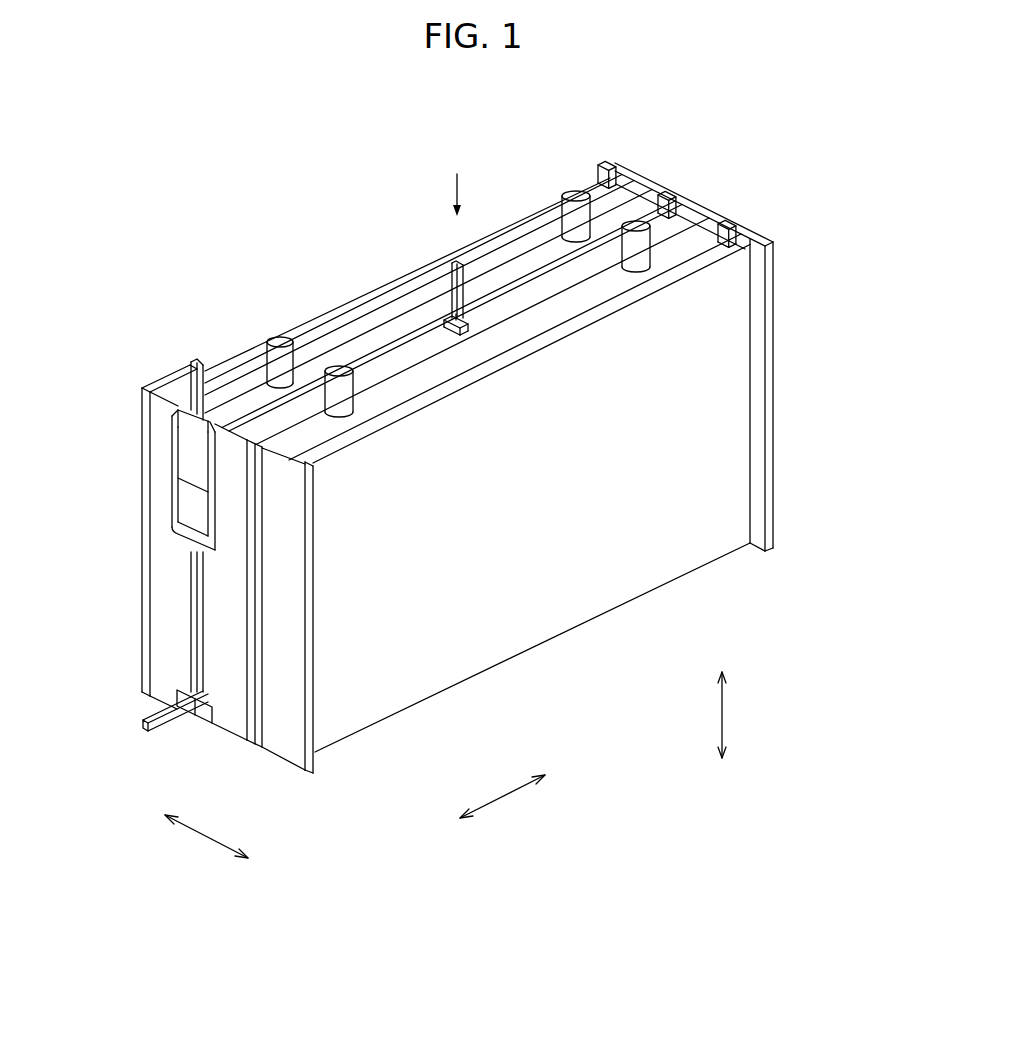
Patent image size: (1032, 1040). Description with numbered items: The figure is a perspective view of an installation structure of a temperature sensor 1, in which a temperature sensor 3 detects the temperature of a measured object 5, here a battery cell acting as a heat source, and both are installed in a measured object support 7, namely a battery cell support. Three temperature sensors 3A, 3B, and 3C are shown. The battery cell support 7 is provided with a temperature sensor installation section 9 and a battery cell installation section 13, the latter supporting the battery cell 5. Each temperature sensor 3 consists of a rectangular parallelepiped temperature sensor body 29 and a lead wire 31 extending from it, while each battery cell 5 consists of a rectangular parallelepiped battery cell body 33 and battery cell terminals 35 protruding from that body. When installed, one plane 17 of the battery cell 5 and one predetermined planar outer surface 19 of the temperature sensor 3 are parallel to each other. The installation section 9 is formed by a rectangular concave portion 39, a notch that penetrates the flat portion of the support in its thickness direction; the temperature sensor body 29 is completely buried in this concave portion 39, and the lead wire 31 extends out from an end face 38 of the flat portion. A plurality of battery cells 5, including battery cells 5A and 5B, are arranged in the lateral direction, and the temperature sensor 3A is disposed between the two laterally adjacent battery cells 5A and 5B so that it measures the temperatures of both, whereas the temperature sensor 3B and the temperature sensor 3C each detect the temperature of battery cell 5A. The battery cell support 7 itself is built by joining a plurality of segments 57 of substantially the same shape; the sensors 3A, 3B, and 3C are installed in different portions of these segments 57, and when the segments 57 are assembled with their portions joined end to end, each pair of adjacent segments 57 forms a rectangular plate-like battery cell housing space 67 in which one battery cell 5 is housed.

The installation structure of a temperature sensor 1 is at (716, 148).
The temperature sensor 3 is at (271, 554).
The temperature sensor 3A is at (447, 338).
The temperature sensor 3B is at (176, 428).
The temperature sensor 3C is at (208, 722).
The measured object (battery cell) 5 is at (457, 310).
The battery cell 5A is at (362, 332).
The battery cell 5B is at (604, 296).
The measured object support (battery cell support) 7 is at (150, 554).
The installation section (temperature sensor installation section) 9 is at (182, 479).
The concave portion (notch) 39 is at (317, 514).
The measured object support section (battery cell installation section) 13 is at (322, 312).
The plane of the battery cell 17 is at (180, 456).
The planar outer surface of the temperature sensor 19 is at (193, 421).
The temperature sensor body 29 is at (185, 510).
The lead wire 31 is at (470, 275).
The battery cell body 33 is at (238, 395).
The battery cell terminals 35 is at (576, 190).
The end face 38 is at (538, 282).
The segments 57 is at (208, 634).
The battery cell housing space 67 is at (422, 300).